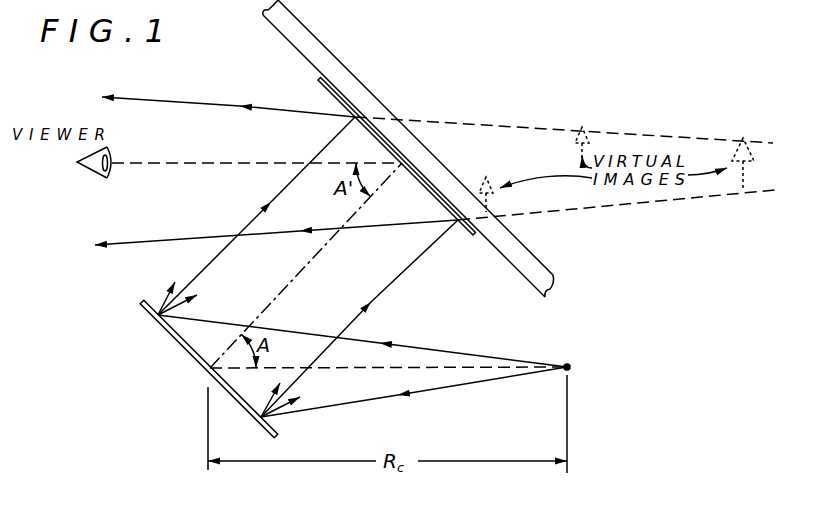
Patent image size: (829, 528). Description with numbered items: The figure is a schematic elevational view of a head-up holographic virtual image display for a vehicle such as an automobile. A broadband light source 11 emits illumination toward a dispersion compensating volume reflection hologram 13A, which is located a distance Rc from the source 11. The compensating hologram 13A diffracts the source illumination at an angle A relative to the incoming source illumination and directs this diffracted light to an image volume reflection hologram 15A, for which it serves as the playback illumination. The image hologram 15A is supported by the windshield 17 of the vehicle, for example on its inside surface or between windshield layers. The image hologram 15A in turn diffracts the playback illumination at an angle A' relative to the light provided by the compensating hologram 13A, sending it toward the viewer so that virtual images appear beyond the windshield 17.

The windshield 17 is at (346, 68).
The image volume reflection hologram 15A is at (474, 236).
The dispersion compensating volume reflection hologram 13A is at (278, 433).
The broadband light source 11 is at (569, 365).